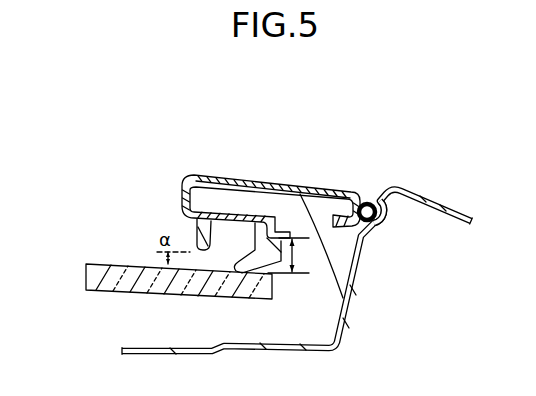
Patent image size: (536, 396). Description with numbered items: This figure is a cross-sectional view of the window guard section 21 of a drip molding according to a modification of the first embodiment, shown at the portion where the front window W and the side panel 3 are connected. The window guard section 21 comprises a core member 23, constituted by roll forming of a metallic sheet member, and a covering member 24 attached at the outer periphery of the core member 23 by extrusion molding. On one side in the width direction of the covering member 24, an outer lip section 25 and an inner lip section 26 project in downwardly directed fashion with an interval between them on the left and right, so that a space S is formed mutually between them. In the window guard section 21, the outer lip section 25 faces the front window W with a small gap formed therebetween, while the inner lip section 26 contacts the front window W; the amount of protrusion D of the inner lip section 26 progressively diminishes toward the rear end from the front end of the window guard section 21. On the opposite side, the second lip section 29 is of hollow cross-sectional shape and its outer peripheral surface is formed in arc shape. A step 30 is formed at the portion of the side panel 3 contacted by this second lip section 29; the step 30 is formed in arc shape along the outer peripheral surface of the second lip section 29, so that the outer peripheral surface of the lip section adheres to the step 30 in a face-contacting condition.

The side panel 3 is at (353, 278).
The window guard section 21 is at (276, 168).
The core member 23 is at (346, 297).
The covering member 24 is at (245, 175).
The outer lip section 25 is at (196, 232).
The inner lip section 26 is at (259, 274).
The second lip section 29 is at (368, 202).
The step 30 is at (383, 218).
The front window W is at (120, 262).
The space S is at (233, 240).
The amount of protrusion D is at (289, 255).